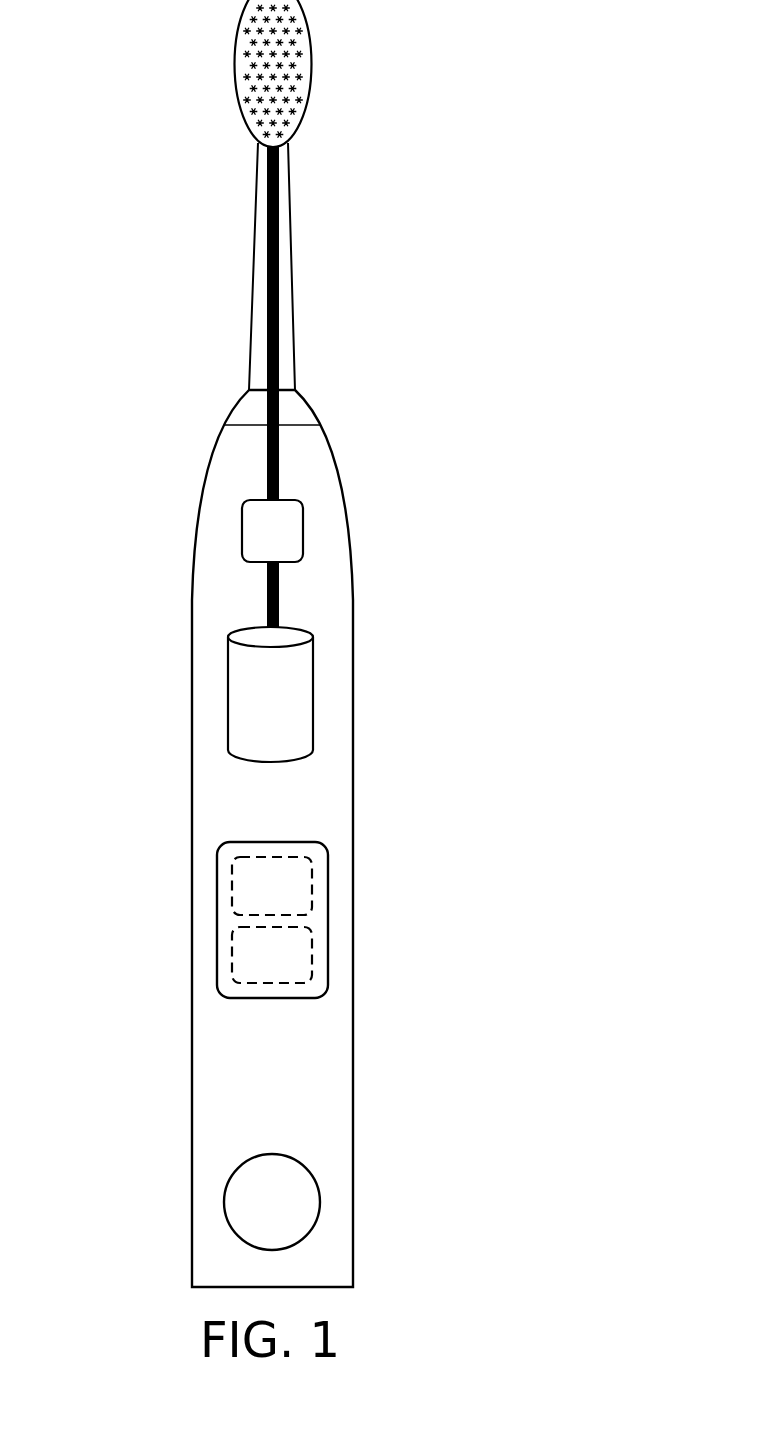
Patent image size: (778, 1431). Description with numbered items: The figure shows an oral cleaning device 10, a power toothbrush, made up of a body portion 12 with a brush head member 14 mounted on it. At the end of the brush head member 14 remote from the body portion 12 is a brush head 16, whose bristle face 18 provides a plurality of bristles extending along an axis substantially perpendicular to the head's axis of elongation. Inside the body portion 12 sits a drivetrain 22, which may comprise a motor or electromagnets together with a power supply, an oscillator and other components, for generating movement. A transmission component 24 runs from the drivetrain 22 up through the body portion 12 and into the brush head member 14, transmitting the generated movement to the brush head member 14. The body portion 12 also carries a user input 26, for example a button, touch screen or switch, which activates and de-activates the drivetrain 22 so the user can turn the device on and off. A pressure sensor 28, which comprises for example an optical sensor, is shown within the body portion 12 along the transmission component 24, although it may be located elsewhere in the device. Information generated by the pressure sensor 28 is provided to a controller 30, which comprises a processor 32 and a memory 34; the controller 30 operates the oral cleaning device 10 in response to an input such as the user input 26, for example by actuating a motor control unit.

The oral cleaning device 10 is at (124, 67).
The body portion 12 is at (188, 609).
The brush head member 14 is at (241, 231).
The brush head 16 is at (237, 97).
The bristle face 18 is at (288, 34).
The drivetrain 22 is at (314, 690).
The transmission component 24 is at (281, 458).
The user input 26 is at (320, 1200).
The pressure sensor 28 is at (304, 530).
The controller 30 is at (217, 925).
The processor 32 is at (312, 943).
The memory 34 is at (312, 872).